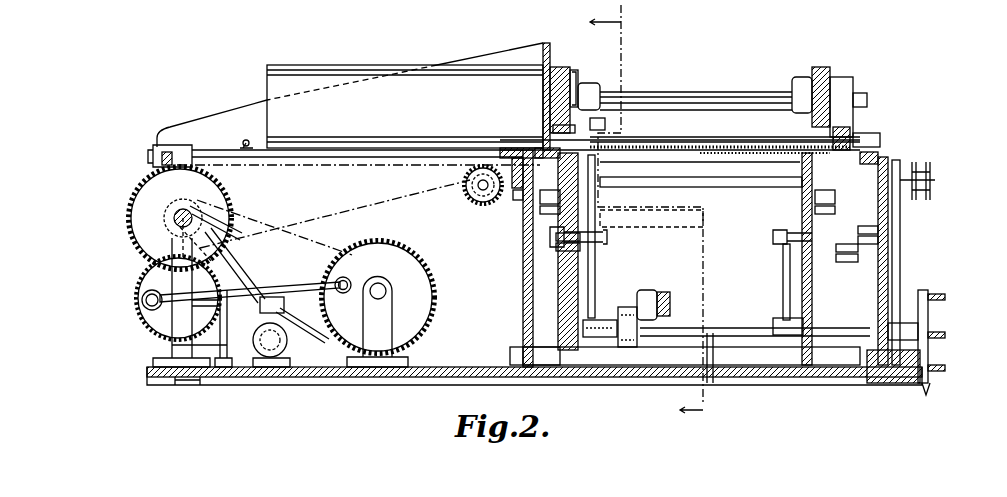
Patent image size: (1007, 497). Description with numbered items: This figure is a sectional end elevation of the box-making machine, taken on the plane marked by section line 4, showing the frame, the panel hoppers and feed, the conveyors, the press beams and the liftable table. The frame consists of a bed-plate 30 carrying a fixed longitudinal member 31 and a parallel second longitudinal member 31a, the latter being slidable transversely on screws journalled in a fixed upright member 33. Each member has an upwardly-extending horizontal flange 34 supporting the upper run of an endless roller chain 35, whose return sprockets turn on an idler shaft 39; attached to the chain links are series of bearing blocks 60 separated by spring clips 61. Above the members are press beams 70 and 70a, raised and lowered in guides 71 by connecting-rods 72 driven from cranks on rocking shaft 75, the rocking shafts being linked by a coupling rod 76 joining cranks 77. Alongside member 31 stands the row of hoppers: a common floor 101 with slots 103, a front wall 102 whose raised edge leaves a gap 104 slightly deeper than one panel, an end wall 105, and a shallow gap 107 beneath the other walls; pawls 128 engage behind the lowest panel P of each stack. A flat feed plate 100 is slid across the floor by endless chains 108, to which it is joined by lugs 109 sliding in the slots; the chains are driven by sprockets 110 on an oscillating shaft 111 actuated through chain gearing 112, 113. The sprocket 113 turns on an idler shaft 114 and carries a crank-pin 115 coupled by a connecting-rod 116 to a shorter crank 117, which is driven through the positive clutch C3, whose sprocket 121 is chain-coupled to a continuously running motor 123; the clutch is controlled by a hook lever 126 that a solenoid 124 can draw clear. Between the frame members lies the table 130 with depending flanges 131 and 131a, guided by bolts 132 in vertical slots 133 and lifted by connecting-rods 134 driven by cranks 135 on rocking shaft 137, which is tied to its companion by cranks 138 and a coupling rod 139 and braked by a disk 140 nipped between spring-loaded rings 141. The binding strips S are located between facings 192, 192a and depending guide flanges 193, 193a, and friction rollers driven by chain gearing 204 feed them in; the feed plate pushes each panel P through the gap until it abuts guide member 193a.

The section line 4- 4 is at (646, 215).
The bed-plate 30 is at (622, 378).
The longitudinal member 31 is at (523, 297).
The second longitudinal member 31a is at (888, 270).
The fixed upright member 33 is at (900, 227).
The horizontal flange 34 is at (560, 210).
The endless roller chain 35 is at (560, 197).
The idler shaft 39 is at (655, 210).
The bearing block 60 is at (618, 180).
The spring clip 61 is at (604, 163).
The press beam 70 is at (574, 70).
The press beam 70a is at (830, 62).
The guide 71 is at (588, 84).
The connecting-rod 72 is at (612, 112).
The rocking shaft 75 is at (694, 340).
The coupling rod 76 is at (670, 305).
The crank 77 is at (655, 292).
The feed plate 100 is at (212, 147).
The floor 101 is at (480, 165).
The front wall 102 is at (548, 92).
The slot 103 is at (405, 158).
The gap 104 is at (556, 128).
The end wall 105 is at (490, 54).
The shallow gap 107 is at (168, 138).
The endless chain 108 is at (313, 166).
The lug 109 is at (186, 152).
The sprocket 110 is at (228, 200).
The oscillating shaft 111 is at (178, 212).
The chain gearing 112 is at (226, 230).
The sprocket 113 is at (418, 265).
The idler shaft 114 is at (388, 291).
The crank-pin 115 is at (348, 280).
The connecting-rod 116 is at (297, 285).
The crank 117 is at (160, 290).
The sprocket 121 is at (238, 276).
The motor 123 is at (288, 341).
The solenoid 124 is at (285, 300).
The hook lever 126 is at (223, 342).
The pawl 128 is at (246, 139).
The table 130 is at (668, 146).
The depending flange 131 is at (578, 238).
The depending flange 131a is at (790, 246).
The bolt 132 is at (556, 238).
The vertical slot 133 is at (556, 248).
The connecting-rod 134 is at (596, 262).
The crank 135 is at (600, 320).
The rocking shaft 137 is at (712, 340).
The crank 138 is at (628, 307).
The coupling rod 139 is at (640, 350).
The brake disk 140 is at (928, 310).
The spring-loaded ring 141 is at (930, 384).
The facing 192 is at (543, 150).
The facing 192a is at (852, 145).
The guide flange 193 is at (598, 125).
The guide flange 193a is at (880, 137).
The chain gearing 204 is at (935, 180).
The panel P is at (712, 139).
The strip S is at (530, 185).
The positive clutch C3 is at (160, 312).